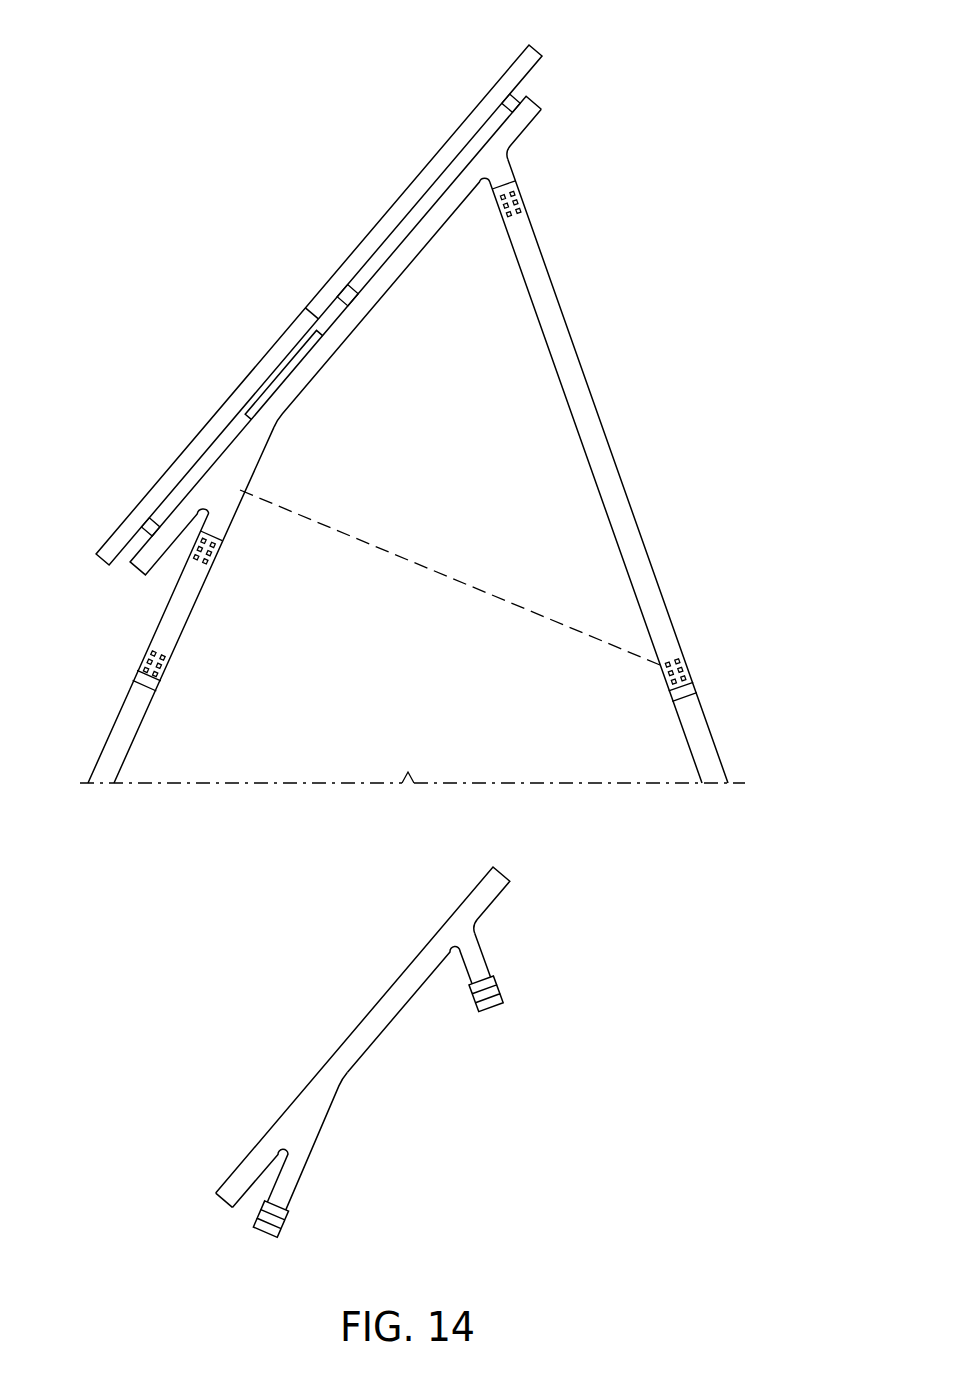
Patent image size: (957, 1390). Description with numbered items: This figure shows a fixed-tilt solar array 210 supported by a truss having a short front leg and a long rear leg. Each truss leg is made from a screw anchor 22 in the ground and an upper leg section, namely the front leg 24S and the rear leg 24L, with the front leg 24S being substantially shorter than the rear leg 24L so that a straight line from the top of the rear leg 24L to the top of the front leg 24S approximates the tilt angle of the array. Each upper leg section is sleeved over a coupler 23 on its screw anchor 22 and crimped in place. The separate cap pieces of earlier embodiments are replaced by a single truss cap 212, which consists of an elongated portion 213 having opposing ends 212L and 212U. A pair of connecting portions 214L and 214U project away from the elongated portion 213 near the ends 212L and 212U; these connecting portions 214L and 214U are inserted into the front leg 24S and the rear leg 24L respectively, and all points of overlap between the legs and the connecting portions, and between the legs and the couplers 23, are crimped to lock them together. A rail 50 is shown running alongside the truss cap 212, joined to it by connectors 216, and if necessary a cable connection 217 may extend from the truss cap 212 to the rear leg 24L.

The fixed-tilt solar array 210 is at (668, 131).
The rail 50 is at (493, 86).
The connector 216 is at (520, 100).
The truss cap 212 is at (380, 304).
The elongated portion 213 is at (263, 393).
The upper end 212U is at (503, 868).
The lower end 212L is at (220, 1206).
The connecting portion 214U is at (483, 953).
The connecting portion 214L is at (308, 1160).
The rear leg 24L is at (616, 461).
The front leg 24S is at (192, 612).
The coupler 23 is at (134, 681).
The screw anchor 22 is at (137, 736).
The cable connection 217 is at (432, 568).